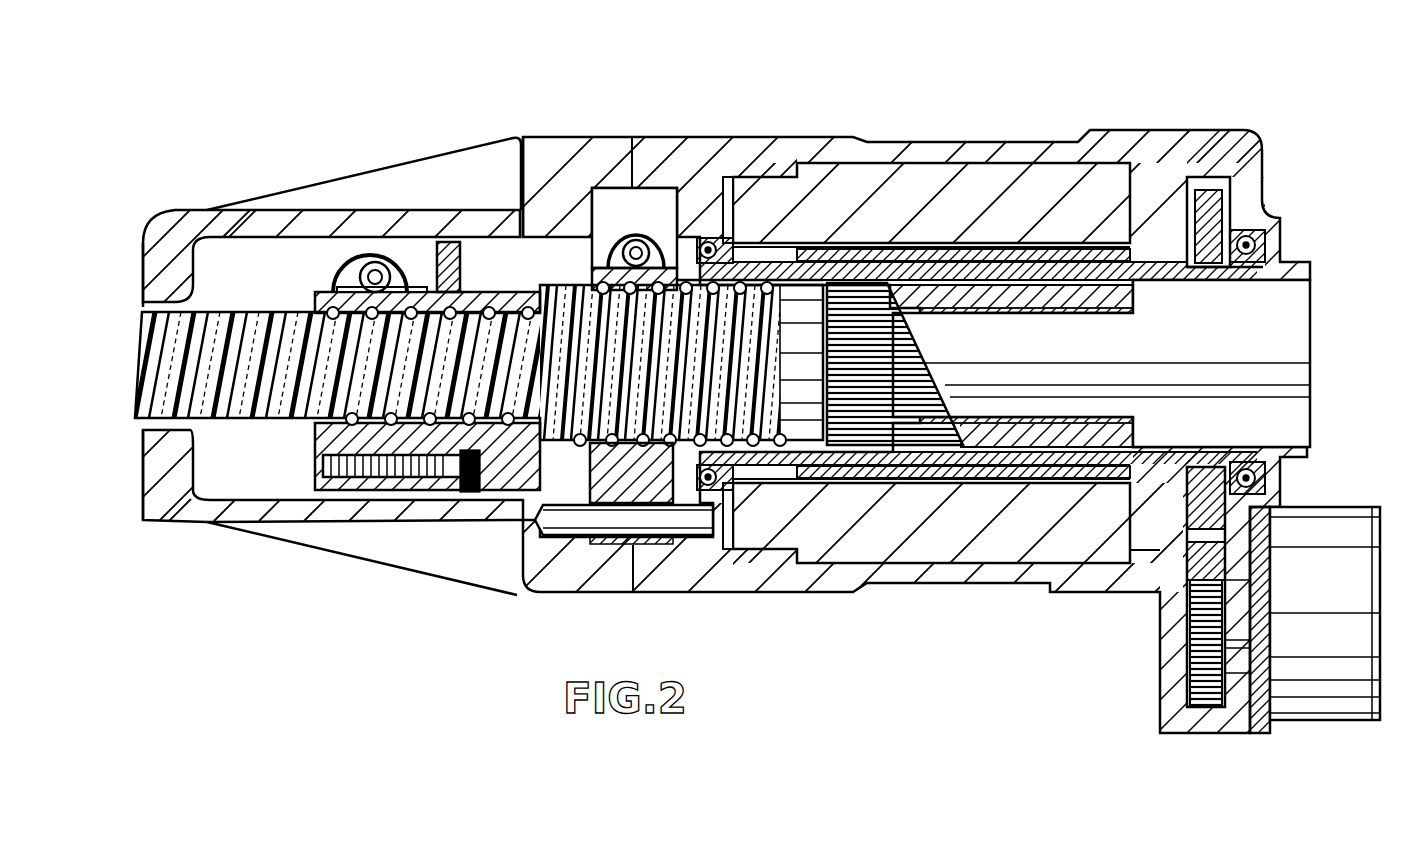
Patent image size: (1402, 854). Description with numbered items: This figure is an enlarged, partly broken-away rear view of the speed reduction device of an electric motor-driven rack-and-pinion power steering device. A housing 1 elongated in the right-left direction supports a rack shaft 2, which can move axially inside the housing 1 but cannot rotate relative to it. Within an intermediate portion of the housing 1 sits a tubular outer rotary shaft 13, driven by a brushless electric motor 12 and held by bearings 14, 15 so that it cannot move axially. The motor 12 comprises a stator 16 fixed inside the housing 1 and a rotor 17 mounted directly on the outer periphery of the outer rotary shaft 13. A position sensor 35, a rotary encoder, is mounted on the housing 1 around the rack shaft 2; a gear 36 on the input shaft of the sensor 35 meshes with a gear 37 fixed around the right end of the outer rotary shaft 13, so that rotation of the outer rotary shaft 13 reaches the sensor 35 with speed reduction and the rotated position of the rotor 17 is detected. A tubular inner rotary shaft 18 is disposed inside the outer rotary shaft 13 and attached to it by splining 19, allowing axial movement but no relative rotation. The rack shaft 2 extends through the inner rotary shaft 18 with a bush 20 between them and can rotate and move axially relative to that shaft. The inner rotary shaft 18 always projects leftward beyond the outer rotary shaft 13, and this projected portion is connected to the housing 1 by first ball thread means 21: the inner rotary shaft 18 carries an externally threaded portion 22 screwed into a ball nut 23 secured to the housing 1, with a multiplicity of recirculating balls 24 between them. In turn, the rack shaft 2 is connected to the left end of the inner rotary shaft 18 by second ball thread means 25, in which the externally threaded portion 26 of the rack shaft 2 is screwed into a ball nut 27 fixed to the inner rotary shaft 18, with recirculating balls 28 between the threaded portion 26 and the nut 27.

The housing 1 is at (890, 580).
The rack shaft 2 is at (1202, 358).
The brushless electric motor 12 is at (994, 156).
The outer rotary shaft 13 is at (766, 467).
The bearing 14 is at (708, 238).
The bearing 15 is at (1256, 234).
The stator 16 is at (1045, 180).
The rotor 17 is at (1083, 250).
The inner rotary shaft 18 is at (1060, 440).
The splining 19 is at (930, 452).
The bush 20 is at (1030, 314).
The first ball thread means 21 is at (574, 255).
The threaded portion 22 is at (578, 282).
The ball nut 23 is at (662, 546).
The recirculating balls 24 is at (590, 475).
The second ball thread means 25 is at (316, 268).
The threaded portion 26 is at (315, 298).
The ball nut 27 is at (378, 480).
The recirculating balls 28 is at (320, 432).
The position sensor 35 is at (1348, 533).
The gear 36 is at (1190, 690).
The gear 37 is at (1212, 185).